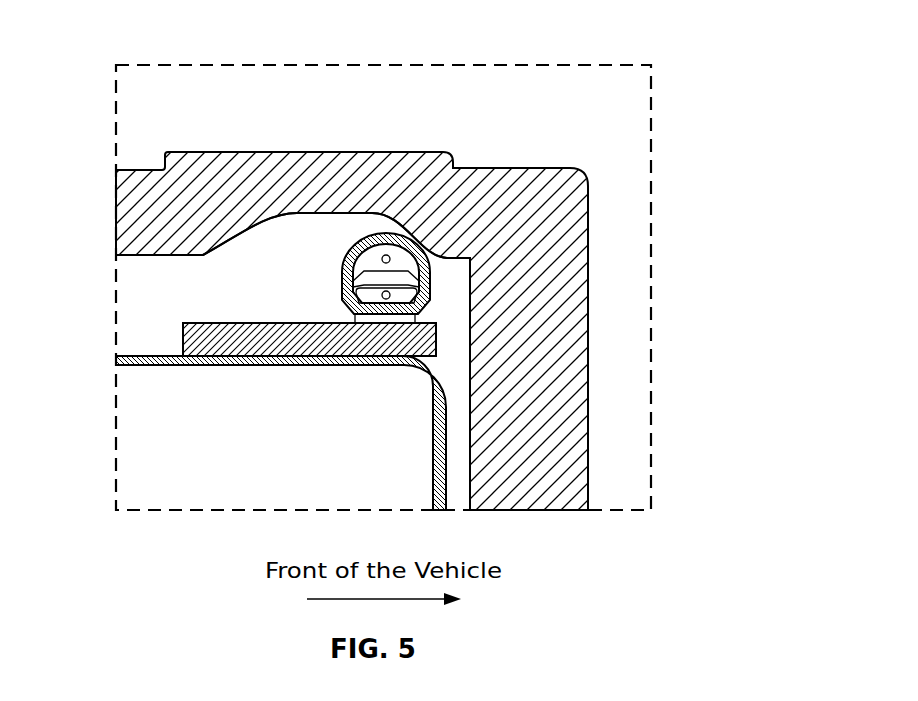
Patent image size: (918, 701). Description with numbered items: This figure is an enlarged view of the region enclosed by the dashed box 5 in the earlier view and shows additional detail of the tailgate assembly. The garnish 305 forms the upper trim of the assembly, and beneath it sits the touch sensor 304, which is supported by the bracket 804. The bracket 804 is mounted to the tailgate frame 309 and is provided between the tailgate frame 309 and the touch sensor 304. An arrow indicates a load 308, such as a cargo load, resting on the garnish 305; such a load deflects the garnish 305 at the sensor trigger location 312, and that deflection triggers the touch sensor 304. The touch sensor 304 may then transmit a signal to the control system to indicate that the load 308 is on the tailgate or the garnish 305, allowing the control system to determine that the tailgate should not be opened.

The dashed box 5 is at (651, 148).
The garnish 305 is at (480, 185).
The load 308 is at (568, 158).
The touch sensor 304 is at (352, 245).
The sensor trigger location 312 is at (402, 233).
The bracket 804 is at (430, 341).
The tailgate frame 309 is at (115, 361).